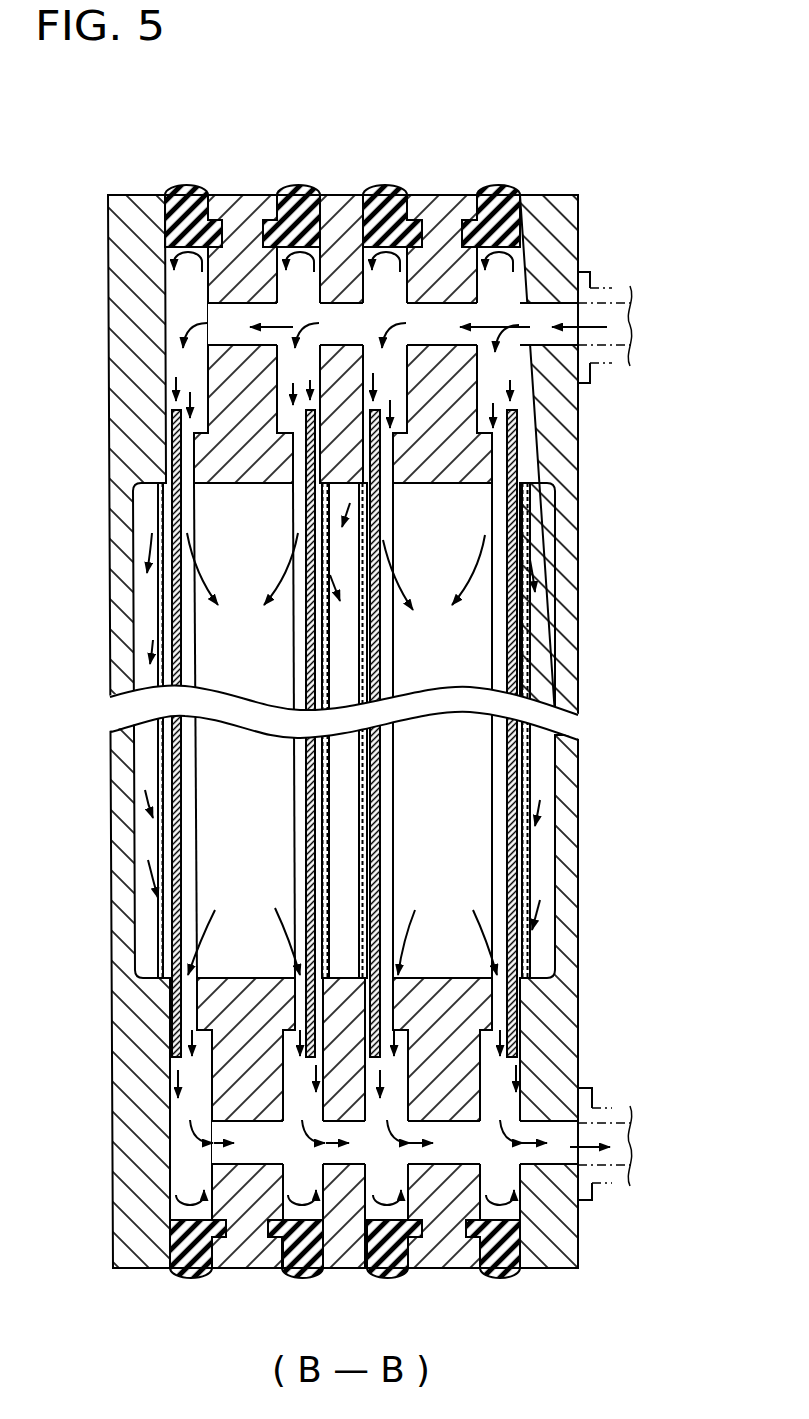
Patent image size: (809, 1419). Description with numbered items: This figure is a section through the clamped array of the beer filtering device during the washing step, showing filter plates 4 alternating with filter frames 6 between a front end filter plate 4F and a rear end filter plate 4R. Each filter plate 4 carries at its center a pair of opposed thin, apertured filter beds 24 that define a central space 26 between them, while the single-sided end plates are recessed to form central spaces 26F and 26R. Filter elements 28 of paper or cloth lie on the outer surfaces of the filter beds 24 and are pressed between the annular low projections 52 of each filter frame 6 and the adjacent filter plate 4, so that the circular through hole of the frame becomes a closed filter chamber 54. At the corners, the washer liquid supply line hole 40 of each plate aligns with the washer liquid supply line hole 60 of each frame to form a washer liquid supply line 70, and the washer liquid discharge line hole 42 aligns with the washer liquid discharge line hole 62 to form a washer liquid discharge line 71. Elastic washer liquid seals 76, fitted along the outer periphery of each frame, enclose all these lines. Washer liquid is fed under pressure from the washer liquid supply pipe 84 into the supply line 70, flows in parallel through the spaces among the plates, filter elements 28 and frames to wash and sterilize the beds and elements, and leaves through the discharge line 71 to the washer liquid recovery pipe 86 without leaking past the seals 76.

The filter plate 4 is at (353, 196).
The front end filter plate 4F is at (130, 203).
The rear end filter plate 4R is at (571, 197).
The filter frame 6 is at (258, 218).
The filter bed 24 is at (160, 608).
The central space 26 is at (345, 777).
The central space of front filter plate 26F is at (152, 761).
The central space of rear filter plate 26R is at (548, 758).
The filter element 28 is at (176, 458).
The washer liquid supply line hole 40 is at (337, 312).
The washer liquid discharge line hole 42 is at (350, 1150).
The annular low projection 52 is at (166, 470).
The filter chamber 54 is at (210, 854).
The washer liquid supply line hole 60 is at (241, 317).
The washer liquid discharge line hole 62 is at (250, 1150).
The washer liquid supply line 70 is at (576, 318).
The washer liquid discharge line 71 is at (220, 1150).
The washer liquid seal 76 is at (185, 190).
The washer liquid supply pipe 84 is at (612, 363).
The washer liquid recovery pipe 86 is at (612, 1178).